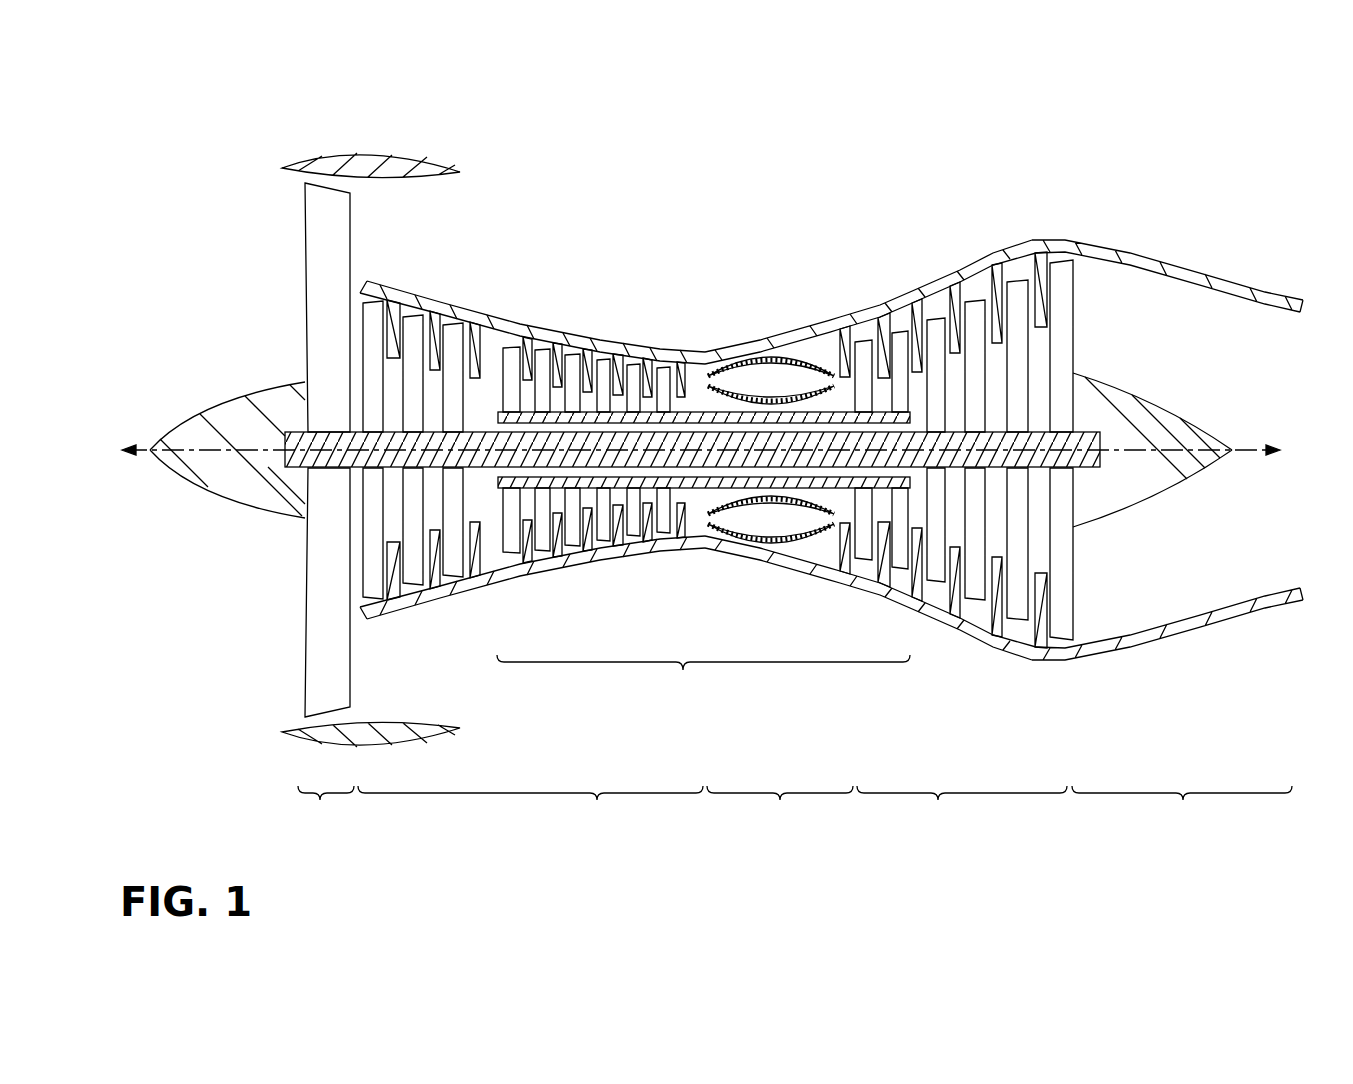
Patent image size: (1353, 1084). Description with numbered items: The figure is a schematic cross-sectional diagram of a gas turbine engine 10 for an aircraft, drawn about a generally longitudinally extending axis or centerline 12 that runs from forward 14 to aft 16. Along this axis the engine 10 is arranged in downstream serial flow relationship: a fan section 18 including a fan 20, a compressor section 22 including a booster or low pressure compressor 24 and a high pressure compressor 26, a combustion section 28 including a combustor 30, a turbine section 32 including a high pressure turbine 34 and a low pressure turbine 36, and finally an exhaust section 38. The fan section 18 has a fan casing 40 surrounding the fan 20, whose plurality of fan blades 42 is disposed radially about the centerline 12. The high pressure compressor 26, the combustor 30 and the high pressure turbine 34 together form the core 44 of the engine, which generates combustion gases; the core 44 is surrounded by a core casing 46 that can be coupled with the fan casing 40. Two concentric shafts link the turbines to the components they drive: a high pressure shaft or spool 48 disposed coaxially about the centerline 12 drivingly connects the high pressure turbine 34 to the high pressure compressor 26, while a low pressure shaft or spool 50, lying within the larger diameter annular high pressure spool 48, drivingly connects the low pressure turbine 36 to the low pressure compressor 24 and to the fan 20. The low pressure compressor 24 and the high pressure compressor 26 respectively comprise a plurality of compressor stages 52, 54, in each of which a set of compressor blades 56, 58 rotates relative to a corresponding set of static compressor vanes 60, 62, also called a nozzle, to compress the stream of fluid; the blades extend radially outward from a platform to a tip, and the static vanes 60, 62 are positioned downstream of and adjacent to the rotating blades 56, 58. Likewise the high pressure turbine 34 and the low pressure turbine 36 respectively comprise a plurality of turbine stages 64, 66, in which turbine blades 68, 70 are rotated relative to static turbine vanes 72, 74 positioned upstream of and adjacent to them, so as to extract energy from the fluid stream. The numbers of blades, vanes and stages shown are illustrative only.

The gas turbine engine 10 is at (174, 88).
The centerline 12 is at (207, 441).
The forward direction 14 is at (113, 452).
The aft direction 16 is at (1290, 452).
The fan section 18 is at (339, 460).
The fan 20 is at (339, 418).
The compressor section 22 is at (531, 511).
The low pressure compressor 24 is at (451, 413).
The high pressure compressor 26 is at (594, 422).
The combustion section 28 is at (779, 541).
The combustor 30 is at (825, 351).
The turbine section 32 is at (951, 486).
The high pressure turbine 34 is at (868, 418).
The low pressure turbine 36 is at (992, 418).
The exhaust section 38 is at (1167, 535).
The fan casing 40 is at (372, 152).
The fan blades 42 is at (316, 659).
The core 44 is at (703, 481).
The core casing 46 is at (748, 337).
The high pressure spool 48 is at (702, 416).
The low pressure spool 50 is at (483, 431).
The compressor stages 52 is at (419, 395).
The compressor stages 54 is at (594, 387).
The compressor blades 56 is at (375, 311).
The compressor blades 58 is at (528, 358).
The static compressor vanes 60 is at (398, 340).
The static compressor vanes 62 is at (539, 350).
The turbine stages 64 is at (872, 388).
The turbine stages 66 is at (992, 395).
The turbine blades 68 is at (901, 349).
The turbine blades 70 is at (1017, 302).
The static turbine vanes 72 is at (883, 350).
The static turbine vanes 74 is at (1000, 289).